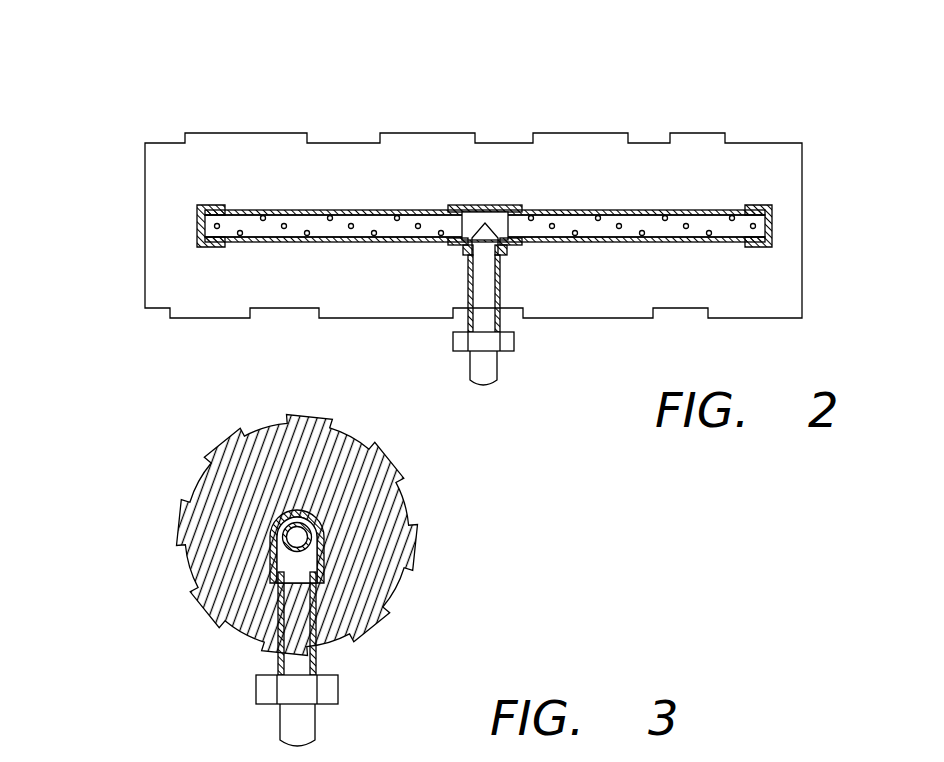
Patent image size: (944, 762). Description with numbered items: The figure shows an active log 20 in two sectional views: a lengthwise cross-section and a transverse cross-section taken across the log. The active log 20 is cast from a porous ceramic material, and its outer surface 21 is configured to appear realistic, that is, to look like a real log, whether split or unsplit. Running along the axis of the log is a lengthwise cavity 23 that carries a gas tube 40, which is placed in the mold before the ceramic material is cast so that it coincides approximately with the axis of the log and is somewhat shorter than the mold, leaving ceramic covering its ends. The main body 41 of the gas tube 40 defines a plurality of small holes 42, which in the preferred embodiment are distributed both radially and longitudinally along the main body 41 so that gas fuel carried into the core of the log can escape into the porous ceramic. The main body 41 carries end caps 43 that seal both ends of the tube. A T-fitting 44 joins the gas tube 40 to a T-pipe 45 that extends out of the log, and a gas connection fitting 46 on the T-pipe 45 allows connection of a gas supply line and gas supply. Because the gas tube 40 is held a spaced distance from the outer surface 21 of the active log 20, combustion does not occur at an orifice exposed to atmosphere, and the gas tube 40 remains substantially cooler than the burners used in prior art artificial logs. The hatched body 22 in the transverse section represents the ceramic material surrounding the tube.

In FIG. 2, the active log 20 is at (145, 188).
In FIG. 2, the outer surface 21 is at (522, 135).
In FIG. 3, the outer surface 21 is at (410, 506).
In FIG. 2, the block body 22 is at (333, 172).
In FIG. 3, the block body 22 is at (382, 570).
In FIG. 2, the lengthwise cavity 23 is at (277, 210).
In FIG. 2, the gas tube 40 is at (295, 247).
In FIG. 3, the gas tube 40 is at (270, 505).
In FIG. 2, the main body 41 is at (607, 220).
In FIG. 2, the small holes 42 is at (715, 228).
In FIG. 2, the end caps 43 is at (760, 215).
In FIG. 2, the T-fitting 44 is at (478, 203).
In FIG. 2, the T-pipe 45 is at (468, 290).
In FIG. 2, the gas connection fitting 46 is at (517, 338).
In FIG. 3, the gas connection fitting 46 is at (338, 688).